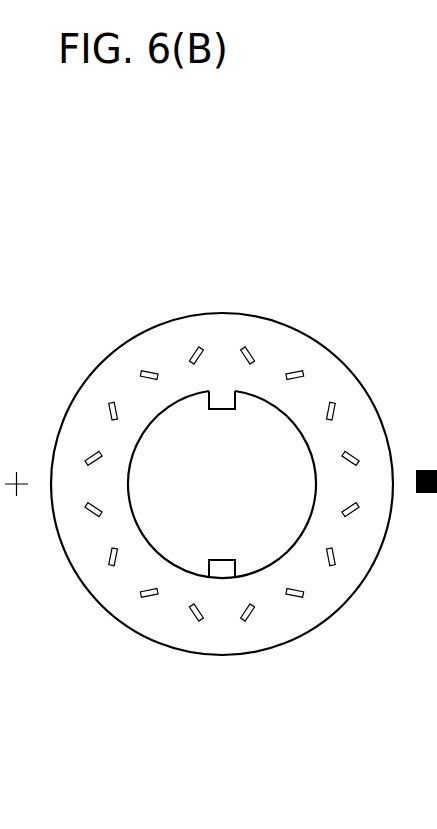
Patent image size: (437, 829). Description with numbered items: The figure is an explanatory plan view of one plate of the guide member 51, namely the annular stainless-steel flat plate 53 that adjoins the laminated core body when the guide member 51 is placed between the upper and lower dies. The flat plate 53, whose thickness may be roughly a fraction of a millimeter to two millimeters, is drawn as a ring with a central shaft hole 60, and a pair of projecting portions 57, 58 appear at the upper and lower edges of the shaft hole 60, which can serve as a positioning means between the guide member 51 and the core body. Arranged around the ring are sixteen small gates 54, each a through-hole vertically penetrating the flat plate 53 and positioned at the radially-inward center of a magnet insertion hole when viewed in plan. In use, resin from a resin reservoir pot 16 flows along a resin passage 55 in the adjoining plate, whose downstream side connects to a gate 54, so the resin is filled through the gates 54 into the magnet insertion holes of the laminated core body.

The resin reservoir pot 16 is at (0, 386).
The guide member 51 is at (82, 191).
The flat plate 53 is at (100, 361).
The gate 54 is at (105, 555).
The resin passage 55 is at (17, 417).
The projecting portion 57 is at (212, 562).
The projecting portion 58 is at (226, 400).
The shaft hole 60 is at (313, 509).